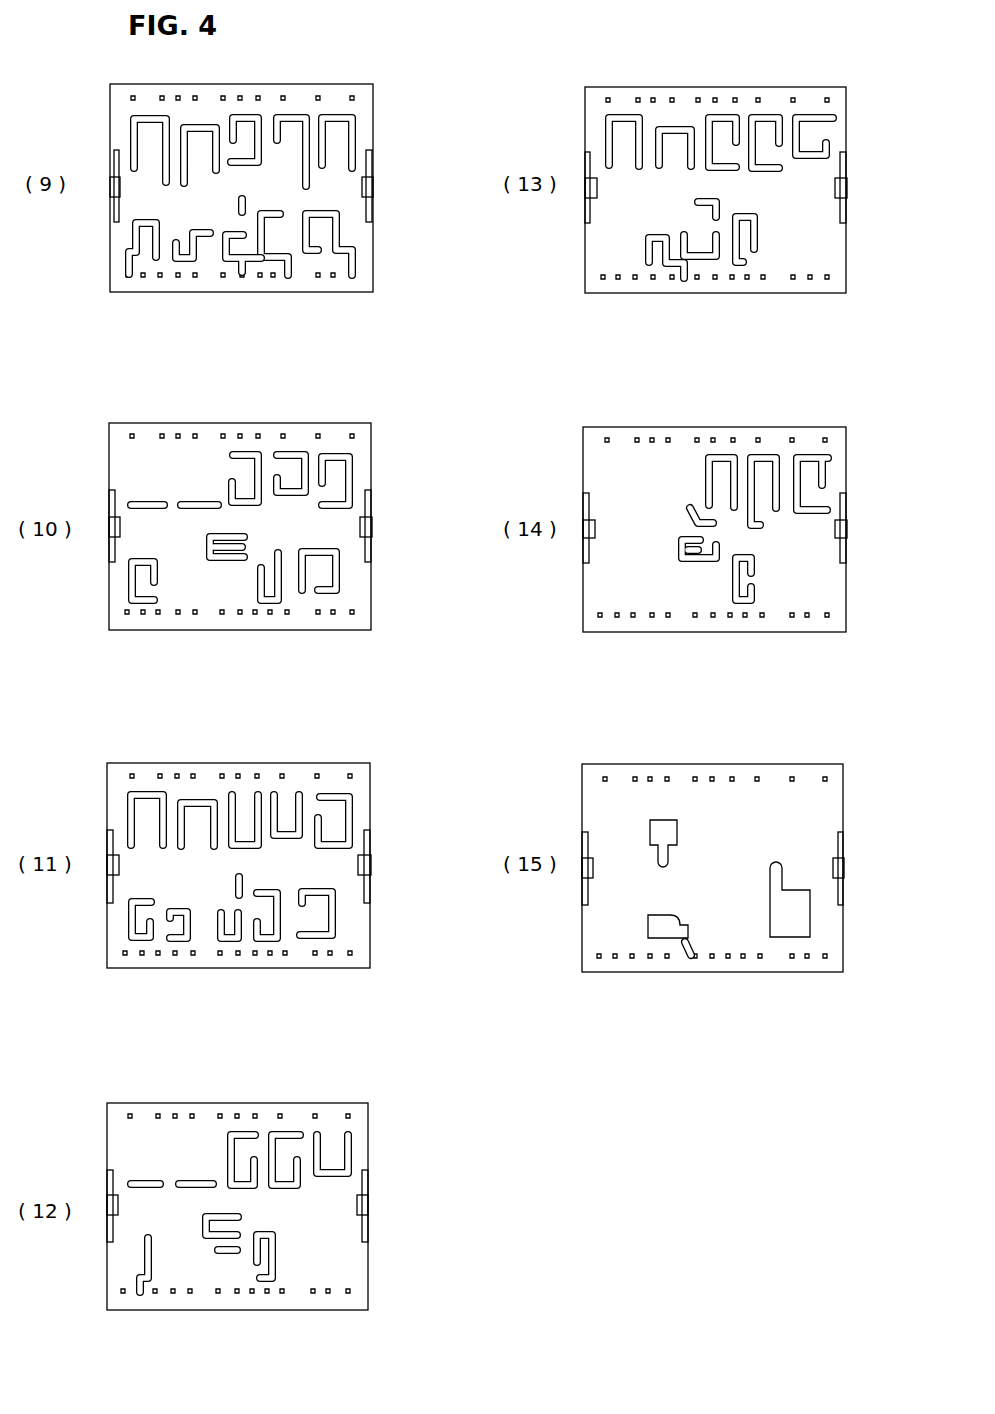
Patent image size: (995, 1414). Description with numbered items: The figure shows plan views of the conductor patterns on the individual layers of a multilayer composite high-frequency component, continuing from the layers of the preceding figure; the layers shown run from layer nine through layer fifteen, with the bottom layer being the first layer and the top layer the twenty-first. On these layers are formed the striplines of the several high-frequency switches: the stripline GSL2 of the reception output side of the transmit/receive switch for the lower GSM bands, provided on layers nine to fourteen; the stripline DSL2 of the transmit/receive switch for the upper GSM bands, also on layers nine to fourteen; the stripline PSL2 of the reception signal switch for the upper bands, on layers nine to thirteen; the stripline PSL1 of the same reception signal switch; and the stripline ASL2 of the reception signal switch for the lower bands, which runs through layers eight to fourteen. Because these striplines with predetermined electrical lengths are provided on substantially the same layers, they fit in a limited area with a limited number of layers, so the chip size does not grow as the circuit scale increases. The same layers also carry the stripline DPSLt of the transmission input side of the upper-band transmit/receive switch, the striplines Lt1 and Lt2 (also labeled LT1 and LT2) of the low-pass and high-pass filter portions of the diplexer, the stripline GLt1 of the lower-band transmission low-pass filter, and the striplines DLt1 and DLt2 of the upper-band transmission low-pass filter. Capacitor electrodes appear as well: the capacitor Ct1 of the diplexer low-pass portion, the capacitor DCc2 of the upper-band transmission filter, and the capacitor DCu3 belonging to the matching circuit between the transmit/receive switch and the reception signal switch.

The stripline PSL2 is at (148, 113).
The stripline DSL2 is at (203, 122).
The stripline PSL1 is at (252, 113).
The stripline GSL2 is at (295, 113).
The stripline ASL2 is at (357, 132).
The stripline LT2 is at (238, 203).
The stripline Lt2 is at (695, 203).
The stripline LT1 is at (340, 575).
The stripline Lt1 is at (336, 252).
The stripline DPSLt is at (270, 210).
The stripline DLt1 is at (230, 262).
The stripline DLt2 is at (182, 263).
The stripline GLt1 is at (128, 237).
The capacitor DCu3 is at (678, 832).
The capacitor DCc2 is at (670, 915).
The capacitor Ct1 is at (780, 915).